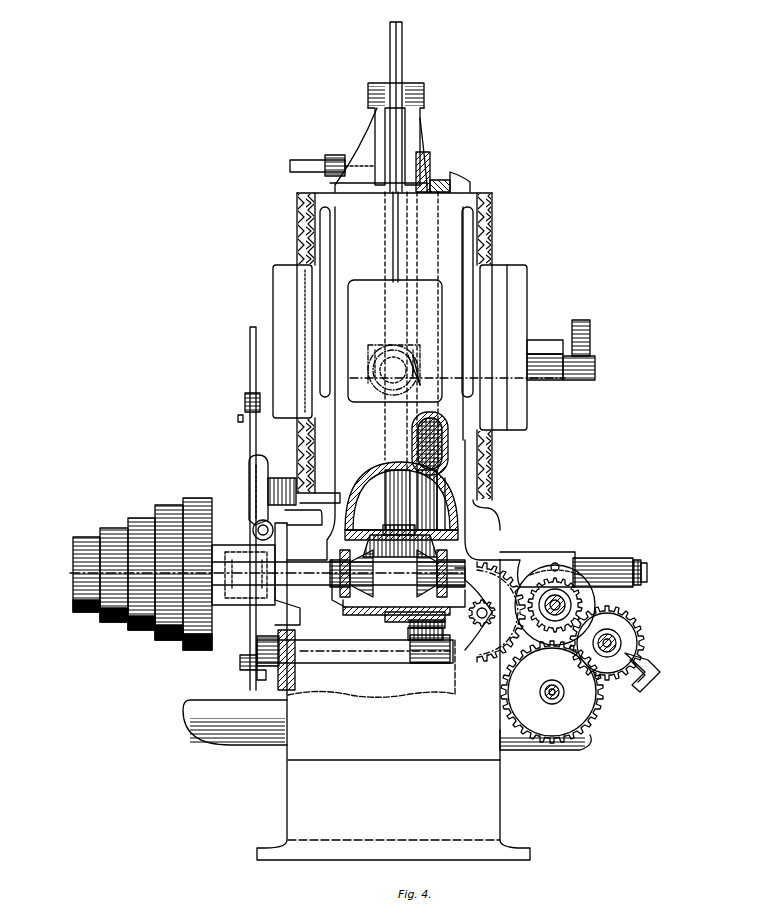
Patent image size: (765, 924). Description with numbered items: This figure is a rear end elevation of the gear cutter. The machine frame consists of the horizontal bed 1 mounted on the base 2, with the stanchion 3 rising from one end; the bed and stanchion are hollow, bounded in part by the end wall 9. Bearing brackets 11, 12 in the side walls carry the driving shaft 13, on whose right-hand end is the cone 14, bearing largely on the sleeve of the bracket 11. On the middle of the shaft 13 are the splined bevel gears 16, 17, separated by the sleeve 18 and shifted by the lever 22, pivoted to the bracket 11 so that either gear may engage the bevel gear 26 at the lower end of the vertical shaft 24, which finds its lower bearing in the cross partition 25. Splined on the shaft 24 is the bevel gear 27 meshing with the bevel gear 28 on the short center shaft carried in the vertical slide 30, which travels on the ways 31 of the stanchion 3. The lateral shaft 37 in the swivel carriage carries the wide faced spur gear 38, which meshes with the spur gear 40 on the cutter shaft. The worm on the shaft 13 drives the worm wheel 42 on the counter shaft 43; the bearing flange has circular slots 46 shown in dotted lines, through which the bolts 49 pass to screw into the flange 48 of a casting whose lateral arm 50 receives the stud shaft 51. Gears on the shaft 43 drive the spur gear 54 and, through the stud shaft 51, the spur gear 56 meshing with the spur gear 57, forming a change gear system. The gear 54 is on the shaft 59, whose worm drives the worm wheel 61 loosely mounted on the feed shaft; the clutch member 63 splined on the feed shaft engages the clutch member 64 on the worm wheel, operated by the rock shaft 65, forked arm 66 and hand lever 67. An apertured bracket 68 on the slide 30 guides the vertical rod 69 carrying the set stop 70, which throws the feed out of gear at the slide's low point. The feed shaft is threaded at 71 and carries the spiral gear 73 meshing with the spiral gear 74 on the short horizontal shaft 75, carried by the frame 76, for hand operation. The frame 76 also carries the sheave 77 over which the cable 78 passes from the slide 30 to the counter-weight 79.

The horizontal bed 1 is at (393, 650).
The base 2 is at (394, 800).
The stanchion 3 is at (389, 376).
The end wall 9 is at (319, 692).
The bearing bracket 11 is at (222, 548).
The bearing bracket 12 is at (522, 556).
The driving shaft 13 is at (222, 600).
The cone 14 is at (116, 618).
The bevel gear 16 is at (360, 590).
The bevel gear 17 is at (418, 590).
The sleeve 18 is at (385, 588).
The lever 22 is at (247, 470).
The vertical shaft 24 is at (390, 378).
The cross partition 25 is at (360, 530).
The bevel gear 26 is at (372, 540).
The bevel gear 27 is at (378, 352).
The bevel gear 28 is at (385, 377).
The vertical slide 30 is at (535, 279).
The ways 31 is at (298, 232).
The lateral shaft 37 is at (450, 380).
The wide faced spur gear 38 is at (596, 368).
The spur gear 40 is at (590, 338).
The worm wheel 42 is at (436, 496).
The counter shaft 43 is at (566, 605).
The circular slots 46 is at (572, 568).
The flange 48 is at (590, 570).
The bolts 49 is at (556, 562).
The lateral arm 50 is at (660, 668).
The stud shaft 51 is at (621, 643).
The spur gear 54 is at (495, 618).
The spur gear 56 is at (622, 622).
The spur gear 57 is at (566, 700).
The shaft 59 is at (486, 607).
The worm wheel 61 is at (388, 621).
The clutch member 63 is at (408, 624).
The clutch member 64 is at (408, 634).
The rock shaft 65 is at (370, 663).
The forked arm 66 is at (448, 663).
The hand lever 67 is at (260, 682).
The apertured bracket 68 is at (245, 402).
The vertical rod 69 is at (249, 352).
The set stop 70 is at (243, 422).
The screw threaded portion 71 is at (445, 432).
The spiral gear 73 is at (446, 172).
The spiral gear 74 is at (431, 160).
The short horizontal shaft 75 is at (326, 157).
The frame 76 is at (420, 113).
The sheave 77 is at (403, 55).
The cable 78 is at (392, 232).
The counter-weight 79 is at (350, 286).